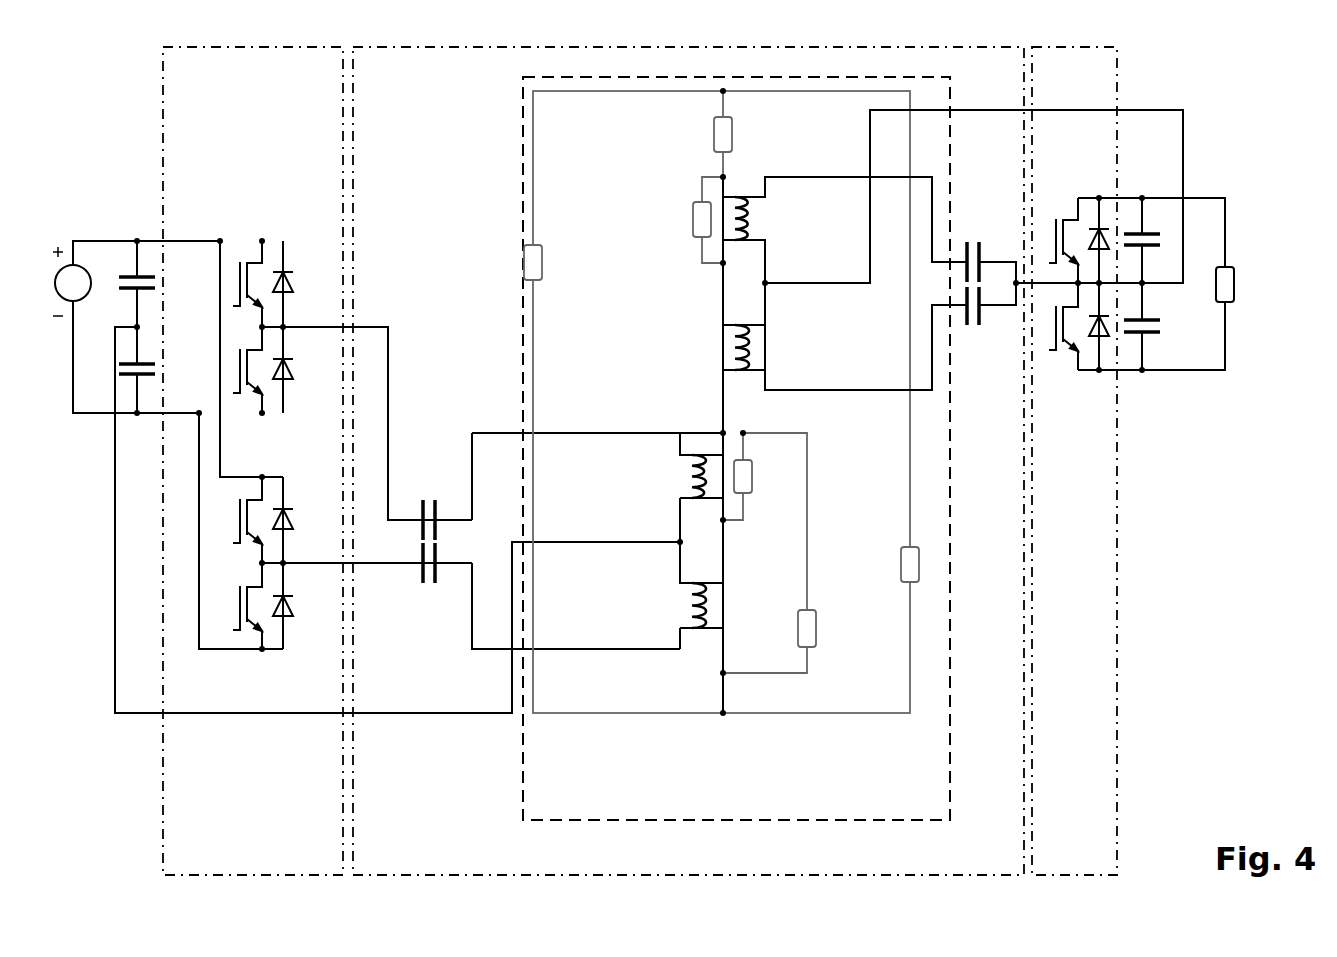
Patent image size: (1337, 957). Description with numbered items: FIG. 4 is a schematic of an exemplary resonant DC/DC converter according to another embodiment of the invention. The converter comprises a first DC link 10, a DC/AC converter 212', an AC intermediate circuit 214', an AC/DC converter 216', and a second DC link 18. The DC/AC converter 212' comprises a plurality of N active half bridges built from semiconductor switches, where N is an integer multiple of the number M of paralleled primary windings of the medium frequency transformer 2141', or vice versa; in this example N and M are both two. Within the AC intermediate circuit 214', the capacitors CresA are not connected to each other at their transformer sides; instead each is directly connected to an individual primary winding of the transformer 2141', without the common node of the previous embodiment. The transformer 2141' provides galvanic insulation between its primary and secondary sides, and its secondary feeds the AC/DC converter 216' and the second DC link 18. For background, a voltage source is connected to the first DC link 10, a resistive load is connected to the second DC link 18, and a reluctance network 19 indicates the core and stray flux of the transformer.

The first DC link 10 is at (125, 247).
The second DC link 18 is at (1143, 347).
The reluctance network 19 is at (858, 713).
The DC/AC converter 212' is at (317, 461).
The AC intermediate circuit 214' is at (780, 461).
The AC/DC converter 216' is at (1174, 461).
The medium frequency transformer 2141' is at (865, 448).